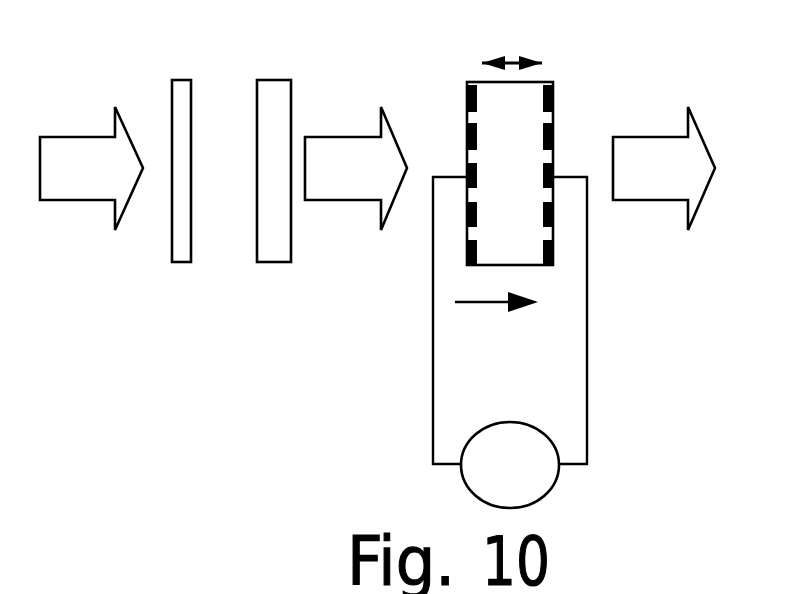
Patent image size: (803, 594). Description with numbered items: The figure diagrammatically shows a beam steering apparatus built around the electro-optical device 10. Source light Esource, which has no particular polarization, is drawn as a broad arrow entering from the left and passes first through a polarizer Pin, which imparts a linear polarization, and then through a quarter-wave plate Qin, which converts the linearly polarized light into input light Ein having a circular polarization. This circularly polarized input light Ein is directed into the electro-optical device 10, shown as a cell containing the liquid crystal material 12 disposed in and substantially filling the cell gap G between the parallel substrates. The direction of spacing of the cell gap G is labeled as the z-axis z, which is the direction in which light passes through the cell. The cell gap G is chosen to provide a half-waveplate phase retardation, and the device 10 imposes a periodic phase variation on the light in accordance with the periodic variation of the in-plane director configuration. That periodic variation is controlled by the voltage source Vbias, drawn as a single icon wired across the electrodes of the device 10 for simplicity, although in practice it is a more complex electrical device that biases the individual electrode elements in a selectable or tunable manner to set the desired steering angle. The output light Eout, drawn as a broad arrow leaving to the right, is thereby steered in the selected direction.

The electro-optical device 10 is at (545, 259).
The liquid crystal material 12 is at (528, 187).
The cell gap G is at (512, 40).
The polarizer Pin is at (192, 141).
The quarter-wave plate Qin is at (281, 141).
The voltage source Vbias is at (510, 342).
The z-axis z is at (509, 299).
The source light Esource is at (91, 168).
The input light Ein is at (356, 168).
The output light Eout is at (664, 168).